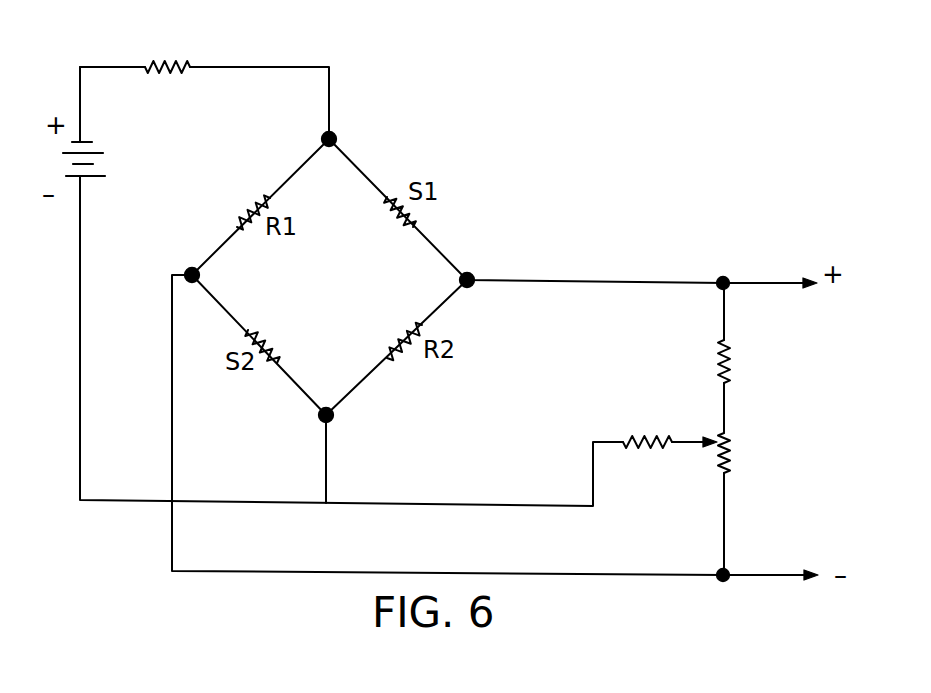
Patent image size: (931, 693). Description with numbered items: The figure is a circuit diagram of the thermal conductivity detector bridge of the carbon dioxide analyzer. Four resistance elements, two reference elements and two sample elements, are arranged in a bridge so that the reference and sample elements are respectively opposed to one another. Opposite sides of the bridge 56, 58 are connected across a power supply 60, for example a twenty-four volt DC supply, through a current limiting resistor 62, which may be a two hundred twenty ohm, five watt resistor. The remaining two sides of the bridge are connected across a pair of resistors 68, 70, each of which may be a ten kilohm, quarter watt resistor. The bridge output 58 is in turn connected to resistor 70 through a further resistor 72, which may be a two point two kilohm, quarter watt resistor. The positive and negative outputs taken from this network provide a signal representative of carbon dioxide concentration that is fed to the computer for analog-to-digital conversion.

The side of the bridge 56 is at (337, 133).
The side of the bridge 58 is at (334, 416).
The power supply 60 is at (112, 157).
The resistor 62 is at (185, 60).
The resistor 68 is at (730, 362).
The resistor 70 is at (728, 465).
The resistor 72 is at (645, 440).